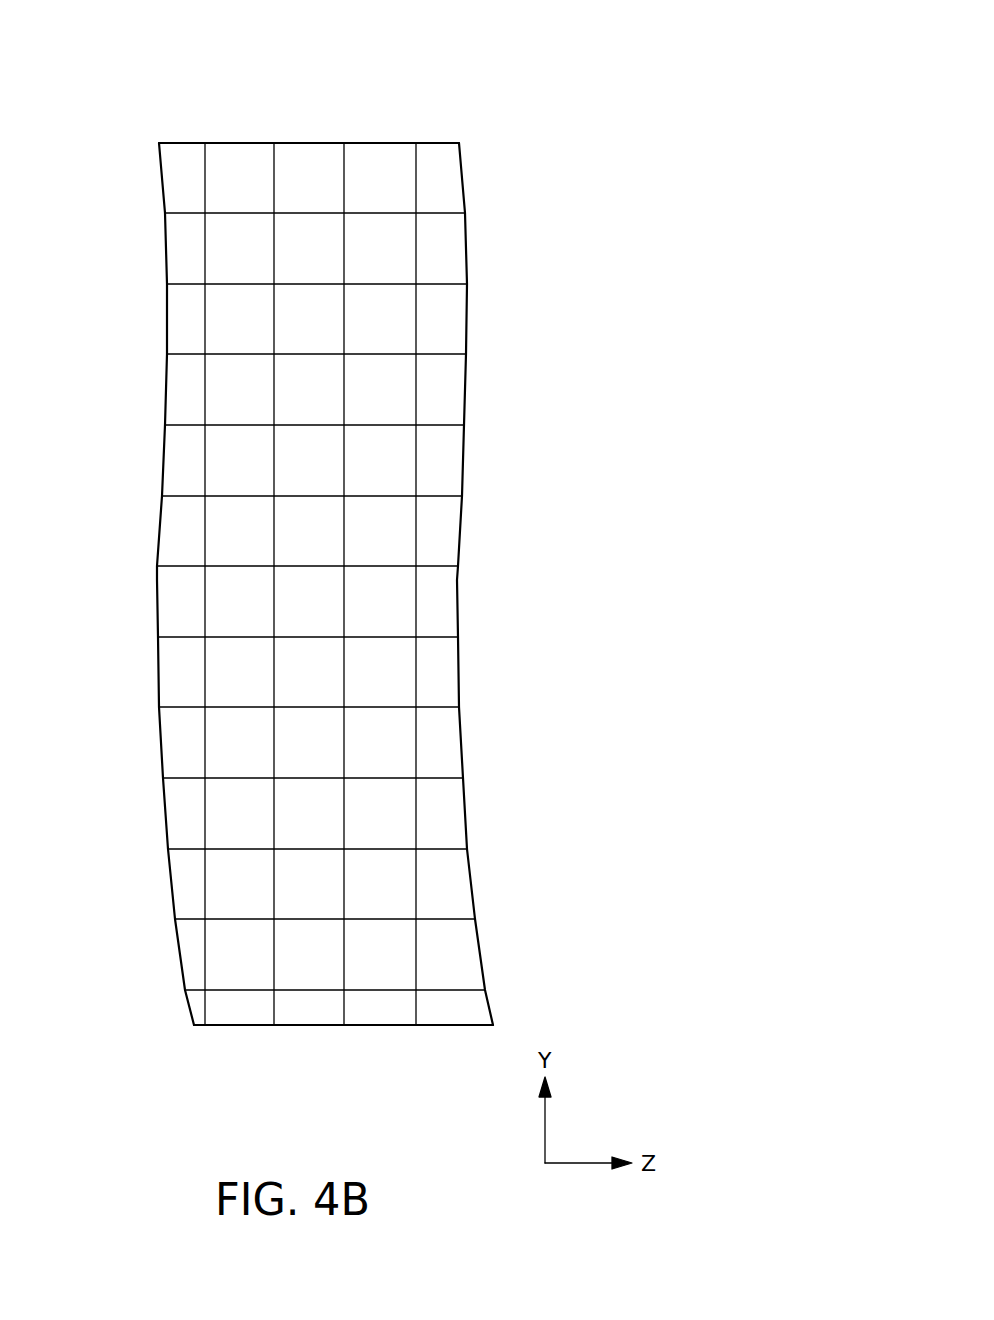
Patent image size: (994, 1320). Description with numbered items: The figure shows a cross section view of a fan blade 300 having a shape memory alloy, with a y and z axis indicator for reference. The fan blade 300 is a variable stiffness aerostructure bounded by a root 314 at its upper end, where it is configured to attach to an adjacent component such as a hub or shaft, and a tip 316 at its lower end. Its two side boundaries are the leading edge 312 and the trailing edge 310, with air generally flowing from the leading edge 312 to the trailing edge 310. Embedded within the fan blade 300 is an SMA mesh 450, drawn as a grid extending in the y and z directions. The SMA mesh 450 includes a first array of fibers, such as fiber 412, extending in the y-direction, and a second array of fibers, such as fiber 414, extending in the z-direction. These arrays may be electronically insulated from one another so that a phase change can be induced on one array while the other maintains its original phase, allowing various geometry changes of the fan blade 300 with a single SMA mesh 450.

The fan blade 300 is at (357, 558).
The trailing edge 310 is at (458, 580).
The leading edge 312 is at (157, 578).
The root 314 is at (305, 143).
The tip 316 is at (343, 1026).
The SMA mesh 450 is at (356, 584).
The fiber 414 is at (436, 423).
The fiber 412 is at (417, 458).